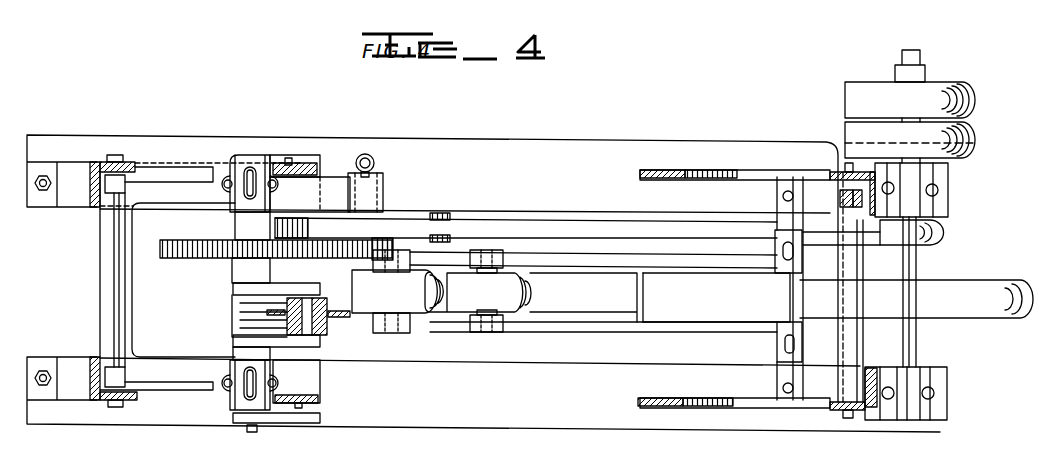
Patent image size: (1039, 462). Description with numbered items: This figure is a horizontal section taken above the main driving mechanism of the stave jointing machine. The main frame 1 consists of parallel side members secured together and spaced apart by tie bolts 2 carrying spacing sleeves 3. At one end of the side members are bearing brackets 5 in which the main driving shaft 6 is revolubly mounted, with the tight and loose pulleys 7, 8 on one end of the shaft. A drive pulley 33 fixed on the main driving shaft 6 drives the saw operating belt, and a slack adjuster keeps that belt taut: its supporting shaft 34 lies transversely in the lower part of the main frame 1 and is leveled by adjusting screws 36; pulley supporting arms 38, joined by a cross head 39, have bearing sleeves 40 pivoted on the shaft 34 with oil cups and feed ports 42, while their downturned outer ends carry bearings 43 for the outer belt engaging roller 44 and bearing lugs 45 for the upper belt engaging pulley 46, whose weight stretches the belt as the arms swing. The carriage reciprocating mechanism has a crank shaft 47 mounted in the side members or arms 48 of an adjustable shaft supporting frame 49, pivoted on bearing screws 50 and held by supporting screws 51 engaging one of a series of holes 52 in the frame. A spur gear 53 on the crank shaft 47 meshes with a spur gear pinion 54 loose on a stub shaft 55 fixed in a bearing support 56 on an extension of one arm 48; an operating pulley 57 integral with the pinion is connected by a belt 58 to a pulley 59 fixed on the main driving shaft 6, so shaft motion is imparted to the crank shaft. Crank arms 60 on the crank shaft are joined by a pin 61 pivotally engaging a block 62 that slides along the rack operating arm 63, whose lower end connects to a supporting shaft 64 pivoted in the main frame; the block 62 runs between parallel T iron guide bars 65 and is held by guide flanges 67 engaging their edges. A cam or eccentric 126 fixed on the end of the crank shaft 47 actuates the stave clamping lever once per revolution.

The main frame 1 is at (90, 178).
The tie bolts 2 is at (843, 193).
The spacing sleeves 3 is at (845, 263).
The bearing brackets 5 is at (930, 207).
The main driving shaft 6 is at (918, 266).
The tight pulley 7 is at (960, 141).
The loose pulley 8 is at (963, 103).
The drive pulley 33 is at (978, 290).
The supporting shaft 34 is at (716, 297).
The adjusting screws 36 is at (783, 196).
The pulley supporting arms 38 is at (578, 262).
The cross head 39 is at (645, 300).
The bearing sleeves 40 is at (800, 268).
The oil cups and feed ports 42 is at (777, 252).
The bearings 43 is at (410, 240).
The outer belt engaging roller 44 is at (420, 330).
The bearing lugs 45 is at (488, 250).
The upper belt engaging pulley 46 is at (478, 292).
The crank shaft 47 is at (243, 226).
The side members or arms 48 is at (173, 188).
The adjustable shaft supporting frame 49 is at (107, 266).
The bearing screws 50 is at (118, 157).
The supporting screws 51 is at (292, 158).
The holes 52 is at (312, 165).
The spur gear 53 is at (276, 263).
The spur gear pinion 54 is at (383, 240).
The stub shaft 55 is at (397, 291).
The bearing support 56 is at (372, 192).
The operating pulley 57 is at (460, 212).
The belt 58 is at (562, 228).
The pulley 59 is at (945, 250).
The crank arms 60 is at (335, 342).
The pin 61 is at (310, 300).
The block 62 is at (282, 366).
The rack operating arm 63 is at (367, 318).
The supporting shaft 64 is at (250, 322).
The T iron guide bars 65 is at (242, 305).
The guide flanges 67 is at (327, 297).
The cam or eccentric 126 is at (288, 417).